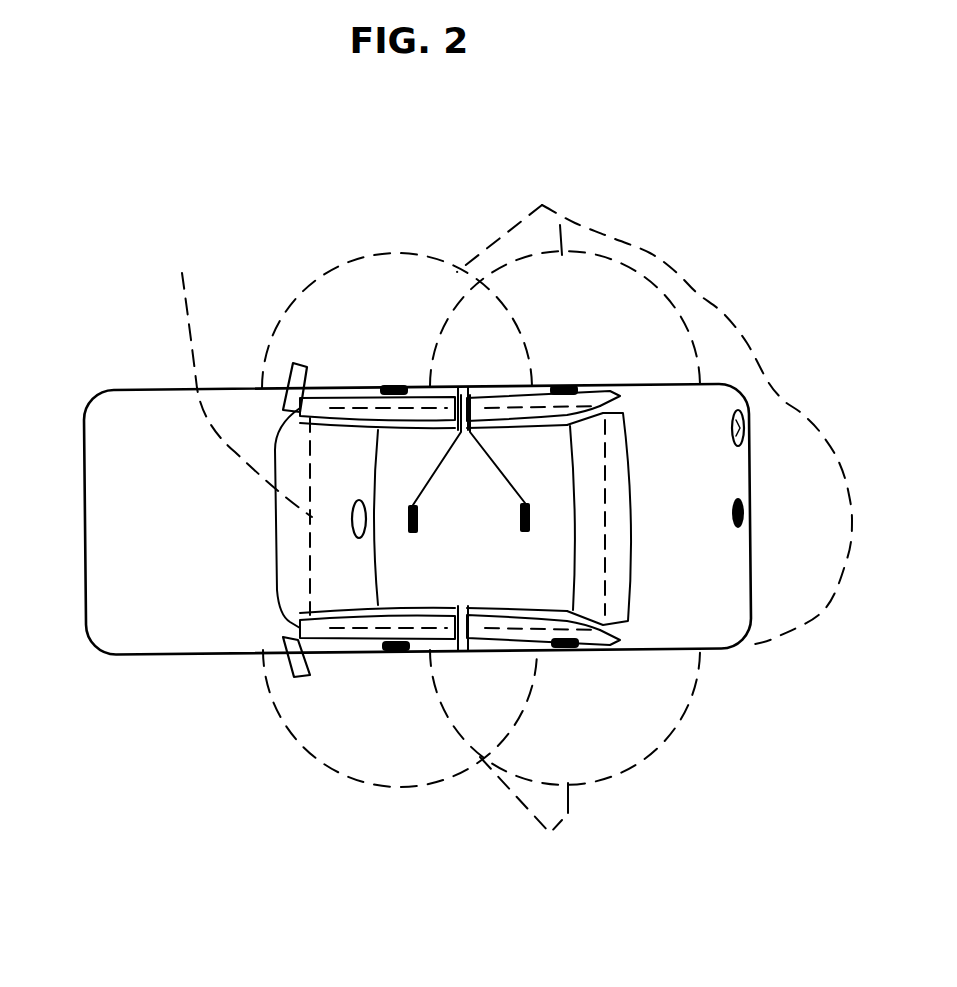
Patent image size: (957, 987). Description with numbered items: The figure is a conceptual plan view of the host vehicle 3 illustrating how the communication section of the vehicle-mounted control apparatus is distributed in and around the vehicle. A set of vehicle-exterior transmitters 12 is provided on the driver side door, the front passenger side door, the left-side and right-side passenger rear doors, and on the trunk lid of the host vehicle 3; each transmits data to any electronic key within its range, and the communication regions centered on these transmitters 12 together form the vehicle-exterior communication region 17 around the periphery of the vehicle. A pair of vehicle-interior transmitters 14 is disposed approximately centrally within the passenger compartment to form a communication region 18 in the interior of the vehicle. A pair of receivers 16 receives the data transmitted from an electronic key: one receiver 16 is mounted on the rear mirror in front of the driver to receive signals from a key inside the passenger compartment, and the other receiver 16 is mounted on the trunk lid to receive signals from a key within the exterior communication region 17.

The host vehicle 3 is at (112, 386).
The vehicle-exterior transmitter 12 is at (388, 385).
The vehicle-interior transmitter 14 is at (466, 390).
The receiver 16 is at (353, 517).
The vehicle-exterior communication region 17 is at (542, 205).
The interior communication region 18 is at (240, 379).